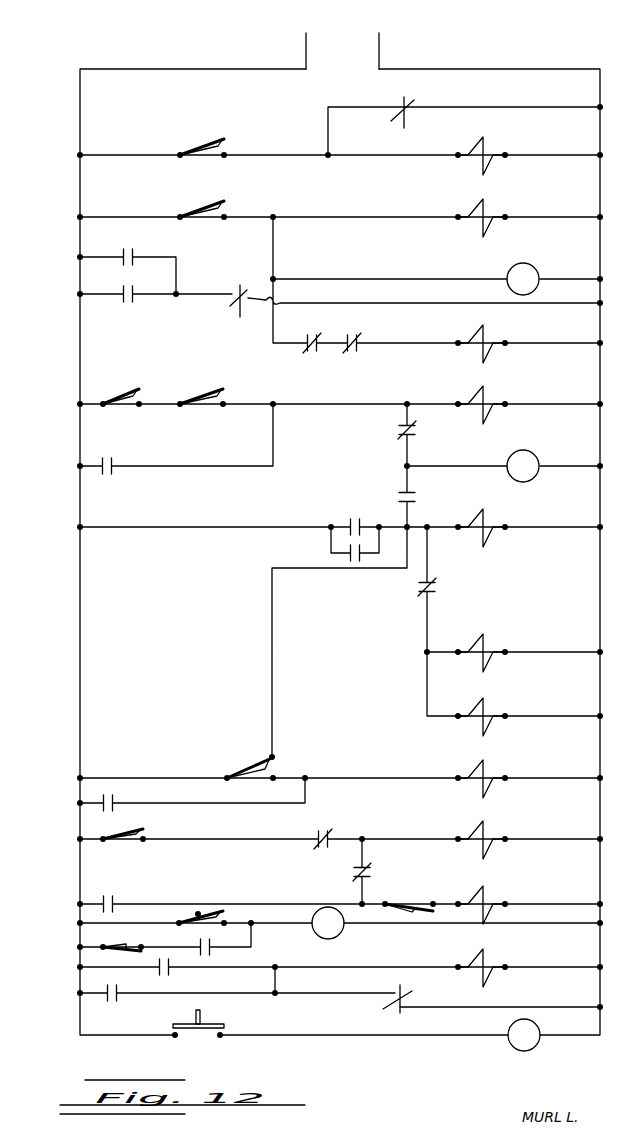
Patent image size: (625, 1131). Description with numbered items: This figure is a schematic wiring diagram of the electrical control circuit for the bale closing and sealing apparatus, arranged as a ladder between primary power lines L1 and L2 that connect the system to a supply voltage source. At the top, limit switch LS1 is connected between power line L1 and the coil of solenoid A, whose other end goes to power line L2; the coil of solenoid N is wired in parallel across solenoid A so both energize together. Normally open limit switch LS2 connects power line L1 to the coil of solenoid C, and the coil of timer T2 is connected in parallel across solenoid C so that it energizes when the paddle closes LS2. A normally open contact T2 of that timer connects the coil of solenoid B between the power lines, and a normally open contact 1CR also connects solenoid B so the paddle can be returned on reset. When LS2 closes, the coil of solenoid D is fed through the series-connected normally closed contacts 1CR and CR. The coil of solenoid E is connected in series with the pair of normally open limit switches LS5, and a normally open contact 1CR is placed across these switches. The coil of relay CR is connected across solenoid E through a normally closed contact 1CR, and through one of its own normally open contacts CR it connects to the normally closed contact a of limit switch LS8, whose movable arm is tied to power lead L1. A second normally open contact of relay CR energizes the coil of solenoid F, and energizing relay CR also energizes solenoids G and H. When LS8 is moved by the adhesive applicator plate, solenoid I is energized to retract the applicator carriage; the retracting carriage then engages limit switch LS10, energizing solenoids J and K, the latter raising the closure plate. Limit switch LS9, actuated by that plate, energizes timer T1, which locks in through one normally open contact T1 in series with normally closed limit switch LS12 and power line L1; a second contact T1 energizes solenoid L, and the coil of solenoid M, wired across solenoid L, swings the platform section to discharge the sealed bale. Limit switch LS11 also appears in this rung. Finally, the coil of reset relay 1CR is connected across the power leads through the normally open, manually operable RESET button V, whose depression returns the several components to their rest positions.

The primary power line L1 is at (292, 42).
The primary power line L2 is at (391, 41).
The solenoid N is at (410, 106).
The solenoid A is at (490, 152).
The solenoid C is at (490, 213).
The solenoid D is at (490, 340).
The solenoid E is at (490, 402).
The solenoid F is at (490, 524).
The solenoid G is at (490, 650).
The solenoid H is at (490, 714).
The solenoid I is at (490, 776).
The solenoid J is at (490, 838).
The solenoid K is at (490, 902).
The solenoid L is at (490, 966).
The solenoid M is at (410, 1003).
The solenoid B is at (246, 288).
The limit switch LS1 is at (201, 141).
The limit switch LS2 is at (201, 203).
The limit switch LS5 is at (121, 391).
The limit switch LS8 is at (276, 760).
The normally closed contact a is at (275, 757).
The limit switch LS9 is at (209, 911).
The limit switch LS10 is at (140, 837).
The limit switch LS11 is at (404, 896).
The limit switch LS12 is at (125, 938).
The reset relay 1CR is at (130, 251).
The relay CR is at (354, 338).
The timer T1 is at (206, 949).
The timer T2 is at (128, 287).
The reset button RESET is at (208, 1019).
The reset button V is at (205, 1040).